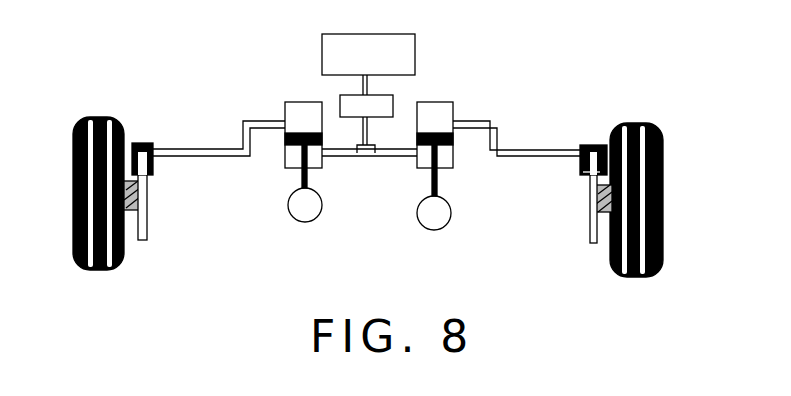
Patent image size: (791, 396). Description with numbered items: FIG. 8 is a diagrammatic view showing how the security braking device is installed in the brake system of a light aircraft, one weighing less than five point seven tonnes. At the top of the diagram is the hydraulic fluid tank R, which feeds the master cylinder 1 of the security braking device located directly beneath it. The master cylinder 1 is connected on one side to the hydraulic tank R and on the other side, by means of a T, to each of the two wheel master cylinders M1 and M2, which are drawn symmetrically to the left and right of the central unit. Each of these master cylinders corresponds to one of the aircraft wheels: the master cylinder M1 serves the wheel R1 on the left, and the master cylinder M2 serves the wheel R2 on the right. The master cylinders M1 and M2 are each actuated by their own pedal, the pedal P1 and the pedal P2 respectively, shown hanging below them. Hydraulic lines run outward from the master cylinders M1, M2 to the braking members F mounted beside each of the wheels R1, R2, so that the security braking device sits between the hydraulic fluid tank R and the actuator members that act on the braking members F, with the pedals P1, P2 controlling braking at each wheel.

The hydraulic fluid tank R is at (322, 54).
The master cylinder 1 is at (382, 105).
The master cylinder M1 is at (300, 114).
The master cylinder M2 is at (442, 112).
The pedal P1 is at (313, 218).
The pedal P2 is at (446, 218).
The braking members F is at (155, 128).
The wheel R1 is at (112, 262).
The wheel R2 is at (624, 259).